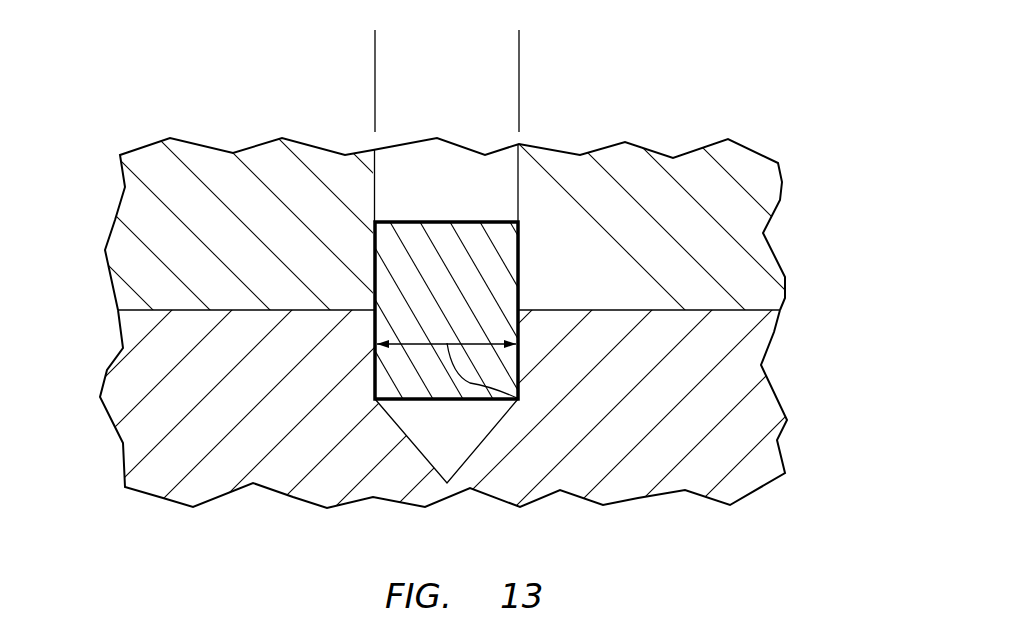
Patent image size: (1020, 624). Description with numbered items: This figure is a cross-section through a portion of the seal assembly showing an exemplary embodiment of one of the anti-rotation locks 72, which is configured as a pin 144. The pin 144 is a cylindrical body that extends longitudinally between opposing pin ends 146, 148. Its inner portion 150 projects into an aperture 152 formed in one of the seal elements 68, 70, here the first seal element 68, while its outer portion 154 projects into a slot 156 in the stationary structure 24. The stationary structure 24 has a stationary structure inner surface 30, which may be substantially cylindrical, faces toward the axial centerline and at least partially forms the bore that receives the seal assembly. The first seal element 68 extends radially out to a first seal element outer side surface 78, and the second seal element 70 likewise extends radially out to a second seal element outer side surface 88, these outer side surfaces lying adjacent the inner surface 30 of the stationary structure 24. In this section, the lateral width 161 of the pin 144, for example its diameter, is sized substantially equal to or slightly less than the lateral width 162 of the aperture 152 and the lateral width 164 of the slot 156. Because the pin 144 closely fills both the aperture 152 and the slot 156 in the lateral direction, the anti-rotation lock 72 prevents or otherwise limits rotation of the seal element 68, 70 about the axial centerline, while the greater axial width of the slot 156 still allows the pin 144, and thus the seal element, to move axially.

The stationary structure 24 is at (785, 180).
The stationary structure inner surface 30 is at (748, 310).
The first seal element 68 is at (481, 283).
The second seal element 70 is at (98, 457).
The anti-rotation lock 72 is at (474, 303).
The pin 144 is at (520, 252).
The first seal element outer side surface 78 is at (508, 291).
The second seal element outer side surface 88 is at (752, 312).
The pin end 146 is at (402, 401).
The pin end 148 is at (427, 222).
The inner portion 150 is at (523, 365).
The aperture 152 is at (372, 357).
The outer portion 154 is at (372, 250).
The slot 156 is at (467, 175).
The lateral width 161 is at (541, 404).
The lateral width 162 is at (518, 398).
The lateral width 164 is at (375, 38).